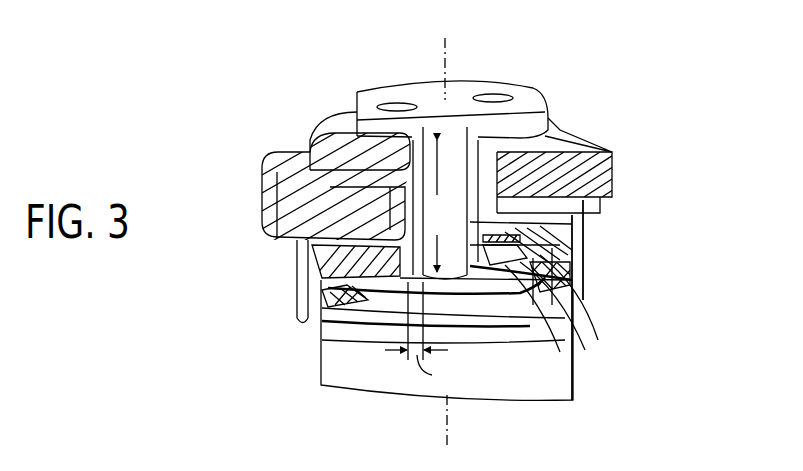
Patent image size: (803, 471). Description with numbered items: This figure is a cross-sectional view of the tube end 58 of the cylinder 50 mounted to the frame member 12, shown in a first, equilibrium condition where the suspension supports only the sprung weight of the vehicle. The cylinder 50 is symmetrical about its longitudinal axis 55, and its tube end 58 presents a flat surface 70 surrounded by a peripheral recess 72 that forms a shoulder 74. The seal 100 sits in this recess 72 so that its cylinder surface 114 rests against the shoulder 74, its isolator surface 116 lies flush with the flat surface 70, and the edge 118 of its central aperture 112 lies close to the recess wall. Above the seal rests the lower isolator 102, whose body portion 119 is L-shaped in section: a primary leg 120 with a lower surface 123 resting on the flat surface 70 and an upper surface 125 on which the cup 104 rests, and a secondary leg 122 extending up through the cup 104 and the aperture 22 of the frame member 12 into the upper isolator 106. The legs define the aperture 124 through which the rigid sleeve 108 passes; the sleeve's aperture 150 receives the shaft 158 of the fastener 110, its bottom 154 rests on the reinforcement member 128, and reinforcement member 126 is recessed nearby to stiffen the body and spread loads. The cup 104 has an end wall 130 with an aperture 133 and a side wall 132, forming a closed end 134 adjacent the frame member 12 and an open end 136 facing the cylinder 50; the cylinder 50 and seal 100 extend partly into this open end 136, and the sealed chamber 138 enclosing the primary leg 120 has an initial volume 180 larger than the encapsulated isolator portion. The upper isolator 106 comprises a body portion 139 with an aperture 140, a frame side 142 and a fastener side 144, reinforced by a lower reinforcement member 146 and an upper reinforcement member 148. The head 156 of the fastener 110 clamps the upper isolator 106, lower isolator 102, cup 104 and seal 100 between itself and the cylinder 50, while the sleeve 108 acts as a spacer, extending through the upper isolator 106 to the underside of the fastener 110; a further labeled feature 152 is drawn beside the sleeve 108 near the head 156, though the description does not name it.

The frame member 12 is at (560, 181).
The aperture of frame member 22 is at (572, 160).
The cylinder 50 is at (575, 394).
The longitudinal axis 55 is at (443, 69).
The tube end 58 is at (572, 320).
The flat surface 70 is at (560, 297).
The recess 72 is at (470, 290).
The shoulder 74 is at (560, 302).
The seal 100 is at (587, 287).
The lower isolator 102 is at (570, 265).
The cup 104 is at (590, 240).
The upper isolator 106 is at (573, 115).
The sleeve 108 is at (525, 95).
The fastener 110 is at (482, 81).
The aperture of seal 112 is at (377, 290).
The cylinder surface of seal 114 is at (548, 305).
The isolator surface of seal 116 is at (310, 280).
The edge of aperture 118 is at (383, 300).
The body portion of lower isolator 119 is at (578, 280).
The primary leg 120 is at (545, 226).
The secondary leg 122 is at (560, 193).
The lower surface of primary leg 123 is at (325, 318).
The aperture of lower isolator 124 is at (527, 143).
The upper surface of primary leg 125 is at (585, 255).
The reinforcement member 126 is at (355, 242).
The reinforcement member 128 is at (522, 275).
The end wall 130 is at (365, 228).
The side wall 132 is at (320, 300).
The aperture of cup 133 is at (340, 200).
The closed end 134 is at (500, 199).
The open end 136 is at (347, 323).
The sealed chamber 138 is at (583, 230).
The body portion of upper isolator 139 is at (540, 125).
The aperture of upper isolator 140 is at (350, 148).
The frame side 142 is at (340, 200).
The fastener side 144 is at (325, 127).
The lower reinforcement member 146 is at (325, 162).
The upper reinforcement member 148 is at (340, 118).
The aperture of sleeve 150 is at (460, 110).
The head underside 152 is at (420, 150).
The bottom of sleeve 154 is at (520, 277).
The head 156 is at (453, 140).
The shaft 158 is at (430, 157).
The initial volume 180 is at (295, 262).